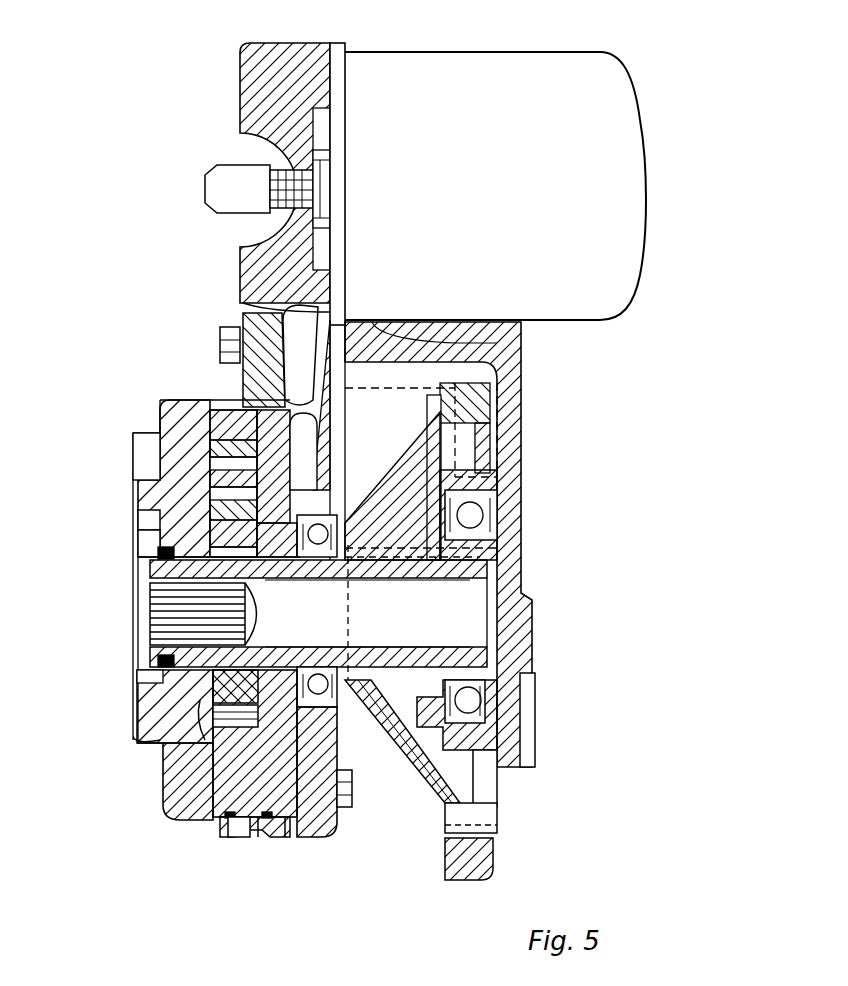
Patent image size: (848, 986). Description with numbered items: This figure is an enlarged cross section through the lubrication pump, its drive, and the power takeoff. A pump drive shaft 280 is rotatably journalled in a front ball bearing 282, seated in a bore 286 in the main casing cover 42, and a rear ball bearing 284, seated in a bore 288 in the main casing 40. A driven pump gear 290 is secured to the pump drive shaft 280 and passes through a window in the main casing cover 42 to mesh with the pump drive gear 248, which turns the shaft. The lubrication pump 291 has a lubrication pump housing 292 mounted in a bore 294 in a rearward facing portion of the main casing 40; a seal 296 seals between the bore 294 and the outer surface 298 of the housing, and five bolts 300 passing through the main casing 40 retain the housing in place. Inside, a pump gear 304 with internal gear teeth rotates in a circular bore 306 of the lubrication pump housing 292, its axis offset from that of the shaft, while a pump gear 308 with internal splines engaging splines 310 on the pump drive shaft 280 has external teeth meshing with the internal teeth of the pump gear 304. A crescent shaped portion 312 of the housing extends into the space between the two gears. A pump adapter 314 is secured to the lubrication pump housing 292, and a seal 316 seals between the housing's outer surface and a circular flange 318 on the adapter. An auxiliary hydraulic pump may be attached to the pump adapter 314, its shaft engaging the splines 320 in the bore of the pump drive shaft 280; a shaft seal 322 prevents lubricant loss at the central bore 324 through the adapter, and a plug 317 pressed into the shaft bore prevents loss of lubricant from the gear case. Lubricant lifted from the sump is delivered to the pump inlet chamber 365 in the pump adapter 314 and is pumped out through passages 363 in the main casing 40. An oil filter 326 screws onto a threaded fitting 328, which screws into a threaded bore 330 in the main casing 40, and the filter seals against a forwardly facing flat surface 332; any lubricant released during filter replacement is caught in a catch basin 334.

The main casing 40 is at (245, 66).
The main casing cover 42 is at (520, 608).
The pump drive gear 248 is at (460, 872).
The pump drive shaft 280 is at (470, 560).
The front ball bearing 282 is at (470, 698).
The rear ball bearing 284 is at (325, 680).
The bore 286 is at (470, 515).
The bore 288 is at (325, 520).
The driven pump gear 290 is at (498, 806).
The lubrication pump 291 is at (163, 396).
The lubrication pump housing 292 is at (355, 800).
The bore 294 is at (300, 832).
The seal 296 is at (265, 832).
The outer surface 298 is at (245, 840).
The bolts 300 is at (352, 788).
The pump gear with internal gear teeth 304 is at (190, 762).
The circular bore 306 is at (170, 790).
The pump gear with internal splines 308 is at (180, 703).
The splines 310 is at (185, 672).
The crescent shaped portion 312 is at (215, 490).
The pump adapter 314 is at (150, 410).
The seal 316 is at (225, 825).
The plug 317 is at (300, 600).
The circular flange 318 is at (222, 400).
The splines 320 is at (150, 600).
The shaft seal 322 is at (172, 568).
The central bore 324 is at (188, 520).
The oil filter 326 is at (622, 300).
The threaded fitting 328 is at (296, 170).
The threaded bore 330 is at (245, 205).
The flat surface 332 is at (336, 48).
The catch basin 334 is at (500, 445).
The passages 363 is at (240, 304).
The pump inlet chamber 365 is at (190, 732).